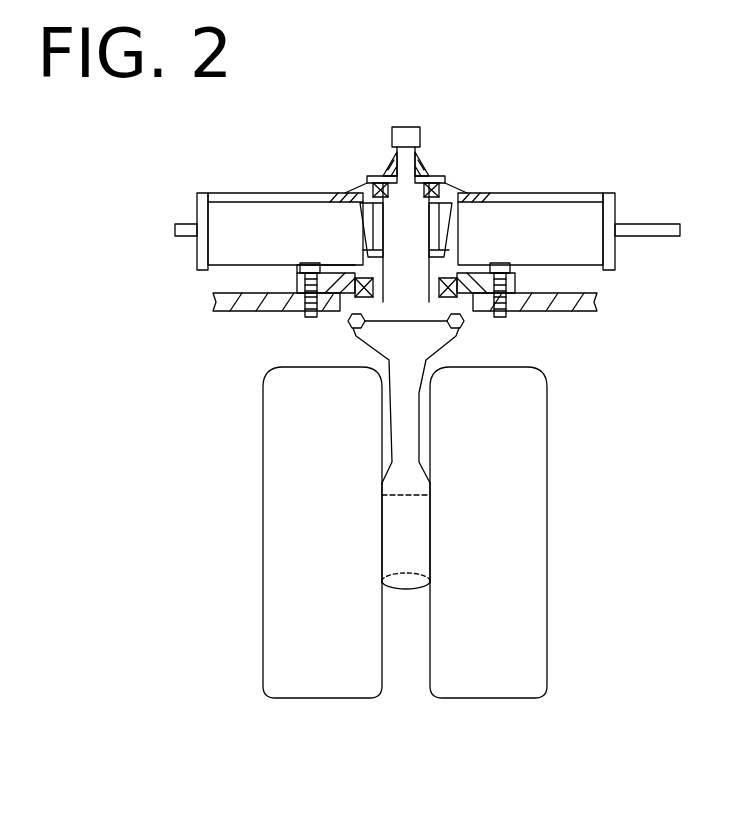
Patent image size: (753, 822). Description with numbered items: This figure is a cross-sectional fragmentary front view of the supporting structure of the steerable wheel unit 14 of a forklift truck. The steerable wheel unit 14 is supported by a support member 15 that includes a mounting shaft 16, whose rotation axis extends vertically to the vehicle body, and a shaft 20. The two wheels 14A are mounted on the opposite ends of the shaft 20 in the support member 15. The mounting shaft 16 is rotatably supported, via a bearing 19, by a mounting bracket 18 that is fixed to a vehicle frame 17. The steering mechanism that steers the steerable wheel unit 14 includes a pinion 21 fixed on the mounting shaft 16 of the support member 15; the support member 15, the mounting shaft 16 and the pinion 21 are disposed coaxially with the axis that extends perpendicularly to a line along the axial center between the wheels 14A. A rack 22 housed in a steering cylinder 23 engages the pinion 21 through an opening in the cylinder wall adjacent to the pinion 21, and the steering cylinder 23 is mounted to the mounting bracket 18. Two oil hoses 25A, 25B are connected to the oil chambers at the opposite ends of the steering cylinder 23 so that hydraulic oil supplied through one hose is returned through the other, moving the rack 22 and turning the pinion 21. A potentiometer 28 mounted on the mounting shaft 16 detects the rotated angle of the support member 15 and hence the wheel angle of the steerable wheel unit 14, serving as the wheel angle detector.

The steerable wheel unit 14 is at (405, 532).
The wheels 14A is at (266, 590).
The support member 15 is at (381, 358).
The mounting shaft 16 is at (432, 316).
The vehicle frame 17 is at (567, 311).
The mounting bracket 18 is at (510, 288).
The bearing 19 is at (368, 268).
The shaft 20 is at (406, 553).
The pinion 21 is at (437, 224).
The rack 22 is at (372, 218).
The steering cylinder 23 is at (557, 191).
The oil hose 25A is at (178, 226).
The oil hose 25B is at (646, 226).
The potentiometer 28 is at (421, 141).